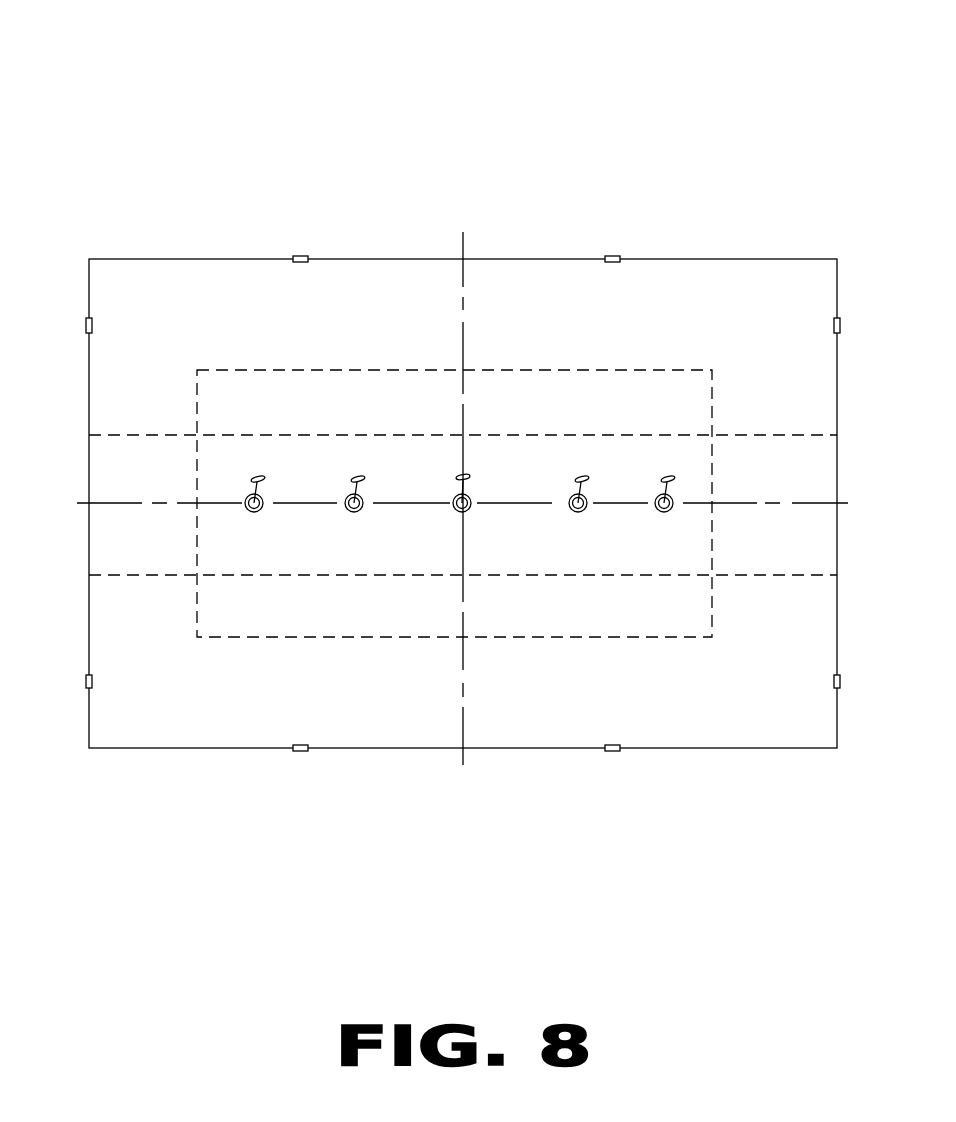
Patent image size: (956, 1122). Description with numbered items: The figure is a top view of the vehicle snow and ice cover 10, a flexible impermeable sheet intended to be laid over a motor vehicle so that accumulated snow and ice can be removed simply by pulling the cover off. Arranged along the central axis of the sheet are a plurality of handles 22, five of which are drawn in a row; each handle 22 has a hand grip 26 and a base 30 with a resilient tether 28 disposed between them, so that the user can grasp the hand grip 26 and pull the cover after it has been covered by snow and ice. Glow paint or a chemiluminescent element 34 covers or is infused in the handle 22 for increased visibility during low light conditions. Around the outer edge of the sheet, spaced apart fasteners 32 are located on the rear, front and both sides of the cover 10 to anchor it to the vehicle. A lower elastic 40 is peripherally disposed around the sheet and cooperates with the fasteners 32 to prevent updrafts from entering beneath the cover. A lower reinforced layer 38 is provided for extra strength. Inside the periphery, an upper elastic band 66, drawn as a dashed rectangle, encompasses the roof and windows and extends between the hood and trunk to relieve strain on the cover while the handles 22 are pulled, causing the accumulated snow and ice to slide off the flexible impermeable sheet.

The vehicle snow and ice cover 10 is at (708, 117).
The lower elastic 40 is at (207, 259).
The fasteners 32 is at (303, 257).
The upper elastic band 66 is at (243, 370).
The lower reinforced layer 38 is at (290, 575).
The handles 22 is at (448, 445).
The hand grip 26 is at (462, 475).
The resilient tether 28 is at (480, 498).
The base 30 is at (456, 497).
The chemiluminescent element 34 is at (467, 482).